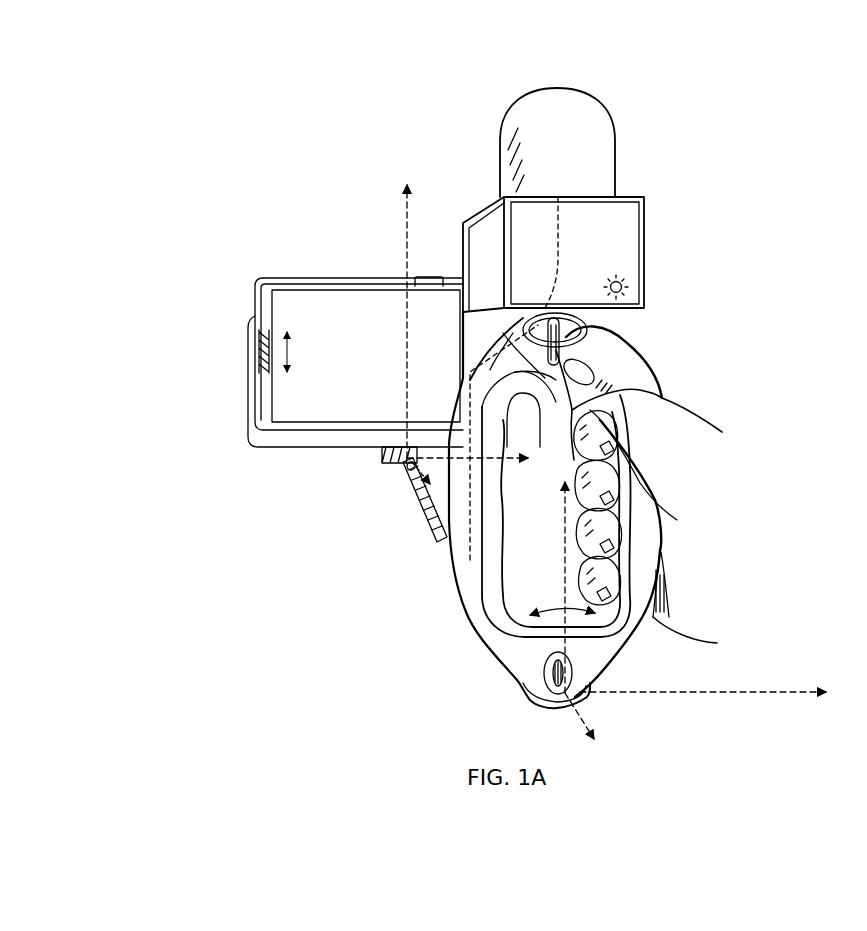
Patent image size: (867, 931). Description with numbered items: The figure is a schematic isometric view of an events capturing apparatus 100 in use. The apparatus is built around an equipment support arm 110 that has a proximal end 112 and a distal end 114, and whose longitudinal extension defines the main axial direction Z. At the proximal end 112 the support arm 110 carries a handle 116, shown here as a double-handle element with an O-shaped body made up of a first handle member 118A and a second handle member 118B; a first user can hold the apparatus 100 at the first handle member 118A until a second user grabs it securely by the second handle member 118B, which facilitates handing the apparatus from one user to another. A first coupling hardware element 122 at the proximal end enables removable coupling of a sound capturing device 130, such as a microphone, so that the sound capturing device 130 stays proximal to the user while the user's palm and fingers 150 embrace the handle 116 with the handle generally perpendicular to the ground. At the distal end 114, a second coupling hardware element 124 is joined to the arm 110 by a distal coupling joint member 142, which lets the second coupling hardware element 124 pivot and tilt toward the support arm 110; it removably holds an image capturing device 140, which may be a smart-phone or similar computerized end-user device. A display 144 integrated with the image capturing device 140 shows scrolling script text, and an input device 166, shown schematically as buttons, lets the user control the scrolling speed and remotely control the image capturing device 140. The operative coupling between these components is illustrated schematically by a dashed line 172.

The events capturing apparatus 100 is at (275, 138).
The equipment support arm 110 is at (436, 516).
The proximal end 112 is at (500, 698).
The distal end 114 is at (406, 489).
The handle 116 is at (317, 623).
The first handle member 118A is at (460, 574).
The second handle member 118B is at (645, 560).
The first coupling hardware element 122 is at (660, 354).
The second coupling hardware element 124 is at (242, 357).
The sound capturing device 130 is at (638, 143).
The image capturing device 140 is at (292, 263).
The distal coupling joint member 142 is at (392, 458).
The display 144 is at (372, 300).
The user's palm and fingers 150 is at (716, 464).
The input device 166 is at (568, 337).
The dashed line 172 is at (558, 252).